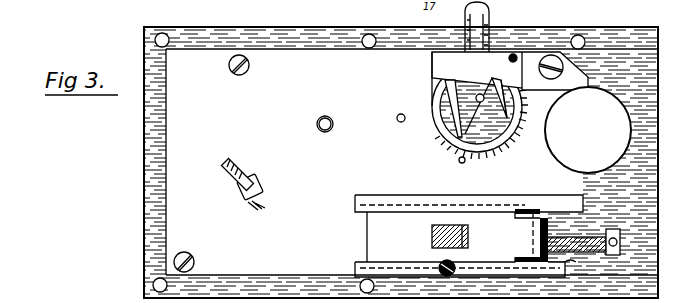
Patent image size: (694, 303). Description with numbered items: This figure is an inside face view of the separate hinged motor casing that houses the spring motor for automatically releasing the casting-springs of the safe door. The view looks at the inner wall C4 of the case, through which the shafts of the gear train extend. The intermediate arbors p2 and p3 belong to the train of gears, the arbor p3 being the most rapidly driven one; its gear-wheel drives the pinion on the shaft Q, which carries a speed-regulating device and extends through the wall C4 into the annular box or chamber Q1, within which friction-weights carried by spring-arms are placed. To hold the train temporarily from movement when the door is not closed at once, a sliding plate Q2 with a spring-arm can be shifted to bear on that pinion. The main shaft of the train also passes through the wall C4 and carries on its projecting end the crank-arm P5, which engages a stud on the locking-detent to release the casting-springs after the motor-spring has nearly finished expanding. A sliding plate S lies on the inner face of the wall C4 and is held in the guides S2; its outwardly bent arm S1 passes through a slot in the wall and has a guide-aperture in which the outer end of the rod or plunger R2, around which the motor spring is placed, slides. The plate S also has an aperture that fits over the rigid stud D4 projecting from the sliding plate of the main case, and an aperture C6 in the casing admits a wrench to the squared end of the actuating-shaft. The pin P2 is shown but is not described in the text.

The inner wall C4 is at (401, 162).
The sliding plate Q2 is at (491, 14).
The shaft Q is at (509, 105).
The annular box or chamber Q1 is at (496, 107).
The aperture C6 is at (588, 178).
The pin P2 is at (327, 116).
The crank-arm P5 is at (247, 168).
The intermediate arbor p2 is at (392, 121).
The intermediate arbor p3 is at (461, 170).
The guides S2 is at (357, 268).
The outwardly-bent arm S1 is at (549, 210).
The sliding plate S is at (468, 251).
The rigid stud D4 is at (432, 238).
The rod or plunger R2 is at (586, 238).